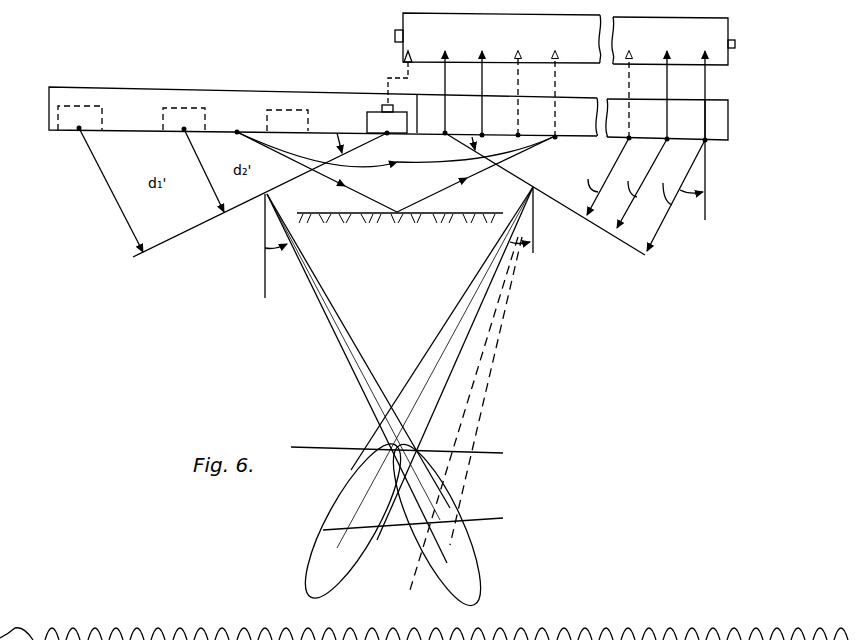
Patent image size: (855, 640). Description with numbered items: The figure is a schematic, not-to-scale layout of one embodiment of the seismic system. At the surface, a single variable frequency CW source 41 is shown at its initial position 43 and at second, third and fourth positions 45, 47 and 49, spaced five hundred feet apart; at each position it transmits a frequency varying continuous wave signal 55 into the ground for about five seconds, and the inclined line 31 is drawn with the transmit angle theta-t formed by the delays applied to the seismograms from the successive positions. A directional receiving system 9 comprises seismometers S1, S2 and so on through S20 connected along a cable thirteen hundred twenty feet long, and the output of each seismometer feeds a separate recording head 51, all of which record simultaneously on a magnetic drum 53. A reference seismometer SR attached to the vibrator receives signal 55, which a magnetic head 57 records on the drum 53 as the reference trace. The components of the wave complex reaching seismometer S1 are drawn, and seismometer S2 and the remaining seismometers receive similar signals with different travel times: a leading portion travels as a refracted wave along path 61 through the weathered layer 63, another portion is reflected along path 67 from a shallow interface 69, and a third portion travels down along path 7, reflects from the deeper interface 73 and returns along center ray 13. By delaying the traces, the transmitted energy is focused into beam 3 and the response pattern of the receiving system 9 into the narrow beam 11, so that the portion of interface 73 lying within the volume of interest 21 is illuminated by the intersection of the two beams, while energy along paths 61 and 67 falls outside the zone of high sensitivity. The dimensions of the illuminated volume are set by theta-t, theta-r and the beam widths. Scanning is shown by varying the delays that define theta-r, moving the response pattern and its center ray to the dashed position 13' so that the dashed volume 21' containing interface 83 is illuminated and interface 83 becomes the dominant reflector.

The magnetic drum 53 is at (728, 30).
The directional receiving system 9 is at (403, 113).
The recording head 51 is at (484, 49).
The magnetic head 57 is at (403, 52).
The CW source 41 is at (377, 115).
The first source position 43 is at (387, 133).
The second source position 45 is at (300, 126).
The third source position 47 is at (183, 130).
The fourth source position 49 is at (77, 128).
The transmitted wavefront 31 is at (230, 217).
The refracted wave path 61 is at (414, 150).
The reflected wave path 67 is at (350, 188).
The weathered layer 63 is at (575, 195).
The interface 69 is at (458, 217).
The transmitted beam 3 is at (331, 300).
The ray path 7 is at (343, 337).
The response pattern beam 11 is at (483, 305).
The center ray 13 is at (435, 367).
The steered receive beam axis 13' is at (466, 413).
The interface 73 is at (330, 447).
The volume of interest 21 is at (353, 521).
The dashed volume 21' is at (437, 525).
The interface 83 is at (490, 518).
The frequency varying continuous wave signal 55 is at (22, 632).
The seismometer S1 is at (452, 129).
The seismometer S2 is at (489, 130).
The seismometer S20 is at (712, 120).
The reference seismometer SR is at (397, 104).